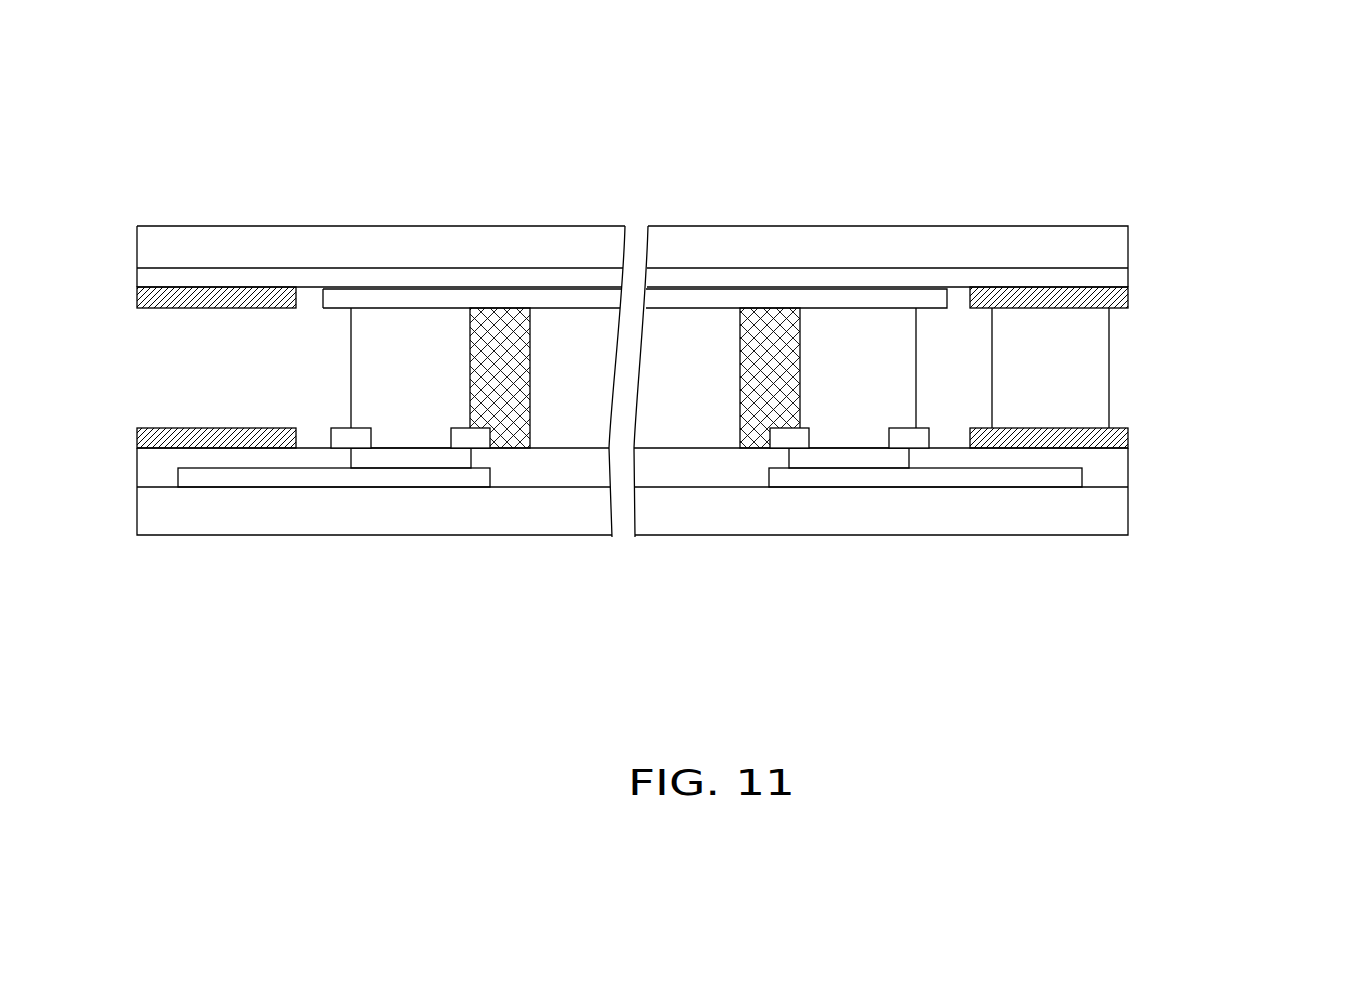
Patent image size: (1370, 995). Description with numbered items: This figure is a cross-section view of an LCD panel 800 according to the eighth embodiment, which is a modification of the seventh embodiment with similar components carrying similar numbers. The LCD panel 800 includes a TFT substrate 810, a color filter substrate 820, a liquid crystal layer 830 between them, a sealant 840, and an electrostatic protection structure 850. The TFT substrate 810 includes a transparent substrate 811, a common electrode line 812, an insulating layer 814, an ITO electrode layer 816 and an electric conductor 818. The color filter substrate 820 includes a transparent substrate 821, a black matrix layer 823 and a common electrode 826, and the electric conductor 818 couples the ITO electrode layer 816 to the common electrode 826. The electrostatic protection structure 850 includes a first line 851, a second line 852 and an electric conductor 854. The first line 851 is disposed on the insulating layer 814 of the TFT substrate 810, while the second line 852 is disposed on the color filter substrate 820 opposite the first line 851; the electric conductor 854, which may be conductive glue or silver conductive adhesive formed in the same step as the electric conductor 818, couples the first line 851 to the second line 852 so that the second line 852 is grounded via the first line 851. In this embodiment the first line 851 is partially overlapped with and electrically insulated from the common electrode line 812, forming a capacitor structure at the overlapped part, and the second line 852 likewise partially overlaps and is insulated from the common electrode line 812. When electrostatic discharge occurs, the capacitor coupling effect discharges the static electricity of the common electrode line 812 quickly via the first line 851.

The LCD panel 800 is at (1272, 73).
The TFT substrate 810 is at (639, 523).
The transparent substrate 811 is at (1098, 520).
The common electrode line 812 is at (875, 482).
The insulating layer 814 is at (1113, 473).
The ITO electrode layer 816 is at (800, 455).
The electric conductor 818 is at (862, 327).
The color filter substrate 820 is at (630, 214).
The transparent substrate 821 is at (1087, 237).
The black matrix layer 823 is at (1107, 275).
The common electrode 826 is at (920, 300).
The liquid crystal layer 830 is at (687, 327).
The sealant 840 is at (775, 325).
The electrostatic protection structure 850 is at (1159, 378).
The first line 851 is at (1110, 449).
The second line 852 is at (1128, 293).
The electric conductor 854 is at (1085, 372).